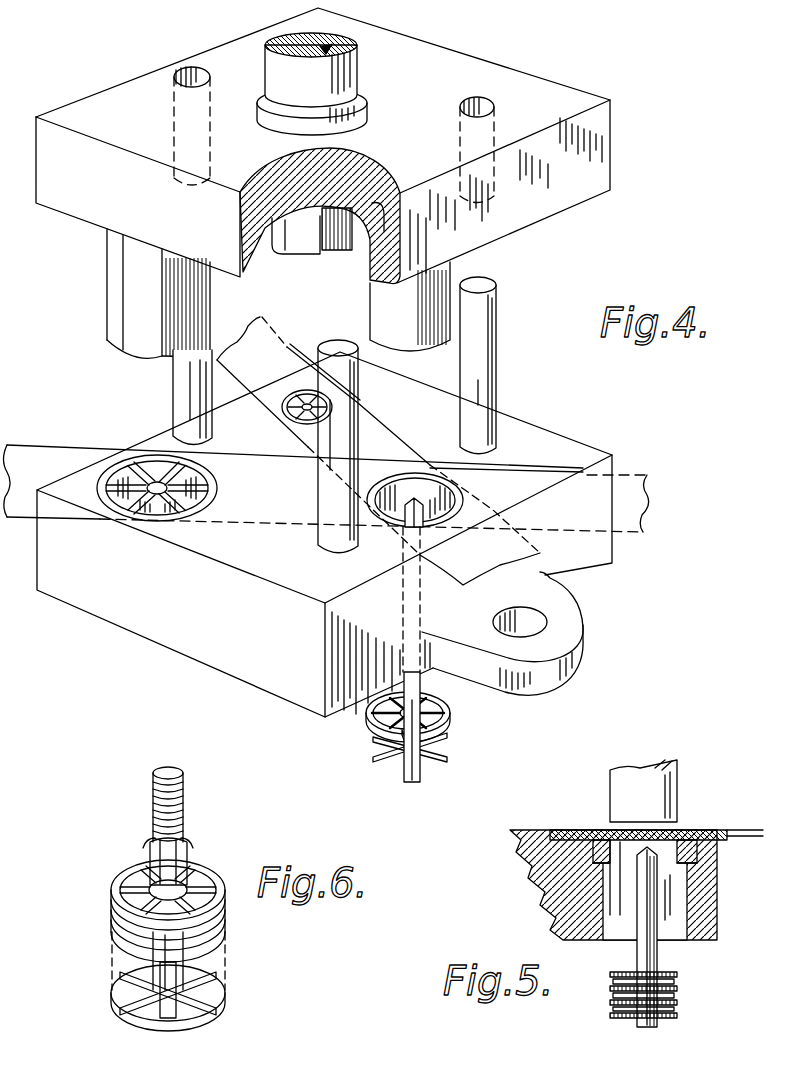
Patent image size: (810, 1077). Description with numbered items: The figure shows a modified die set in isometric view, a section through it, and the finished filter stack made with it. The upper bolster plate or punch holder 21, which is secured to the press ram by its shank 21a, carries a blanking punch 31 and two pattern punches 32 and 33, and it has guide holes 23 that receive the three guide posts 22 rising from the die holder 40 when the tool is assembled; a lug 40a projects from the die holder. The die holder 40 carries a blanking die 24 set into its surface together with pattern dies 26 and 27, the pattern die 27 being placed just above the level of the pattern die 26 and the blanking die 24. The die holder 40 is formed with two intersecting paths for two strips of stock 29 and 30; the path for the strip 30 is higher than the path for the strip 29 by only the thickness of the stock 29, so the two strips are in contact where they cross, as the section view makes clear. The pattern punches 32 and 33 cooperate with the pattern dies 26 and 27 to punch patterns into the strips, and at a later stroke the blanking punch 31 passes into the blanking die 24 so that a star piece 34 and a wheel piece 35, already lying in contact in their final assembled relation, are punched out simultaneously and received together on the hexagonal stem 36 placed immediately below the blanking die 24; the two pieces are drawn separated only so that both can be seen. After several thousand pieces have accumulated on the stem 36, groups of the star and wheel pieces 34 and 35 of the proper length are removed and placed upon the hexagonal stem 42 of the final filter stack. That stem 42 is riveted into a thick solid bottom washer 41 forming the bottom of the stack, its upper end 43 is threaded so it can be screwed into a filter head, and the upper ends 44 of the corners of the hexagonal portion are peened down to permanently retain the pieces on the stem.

In FIG. 4, the upper bolster plate or punch holder 21 is at (593, 160).
In FIG. 4, the shank 21a is at (345, 82).
In FIG. 4, the guide posts 22 is at (182, 382).
In FIG. 4, the guide holes 23 is at (182, 72).
In FIG. 4, the blanking die 24 is at (410, 525).
In FIG. 5, the blanking die 24 is at (697, 863).
In FIG. 4, the pattern die 26 is at (147, 523).
In FIG. 4, the pattern die 27 is at (277, 420).
In FIG. 4, the strip of stock 29 is at (77, 452).
In FIG. 5, the strip of stock 29 is at (748, 826).
In FIG. 4, the strip of stock 30 is at (288, 345).
In FIG. 5, the strip of stock 30 is at (603, 833).
In FIG. 4, the blanking punch 31 is at (442, 273).
In FIG. 5, the blanking punch 31 is at (678, 800).
In FIG. 4, the pattern punch 32 is at (130, 277).
In FIG. 4, the pattern punch 33 is at (307, 252).
In FIG. 4, the star piece 34 is at (437, 738).
In FIG. 5, the star piece 34 is at (678, 985).
In FIG. 6, the star piece 34 is at (147, 957).
In FIG. 4, the wheel piece 35 is at (450, 708).
In FIG. 5, the wheel piece 35 is at (605, 1000).
In FIG. 6, the wheel piece 35 is at (120, 922).
In FIG. 4, the hexagonal stem 36 is at (420, 770).
In FIG. 5, the hexagonal stem 36 is at (637, 952).
In FIG. 4, the die holder 40 is at (43, 553).
In FIG. 5, the die holder 40 is at (707, 912).
In FIG. 4, the mounting lug of die block 40a is at (580, 635).
In FIG. 6, the bottom washer 41 is at (208, 1000).
In FIG. 6, the stem 42 is at (183, 857).
In FIG. 6, the upper end 43 is at (183, 808).
In FIG. 6, the upper ends of the corners 44 is at (150, 843).